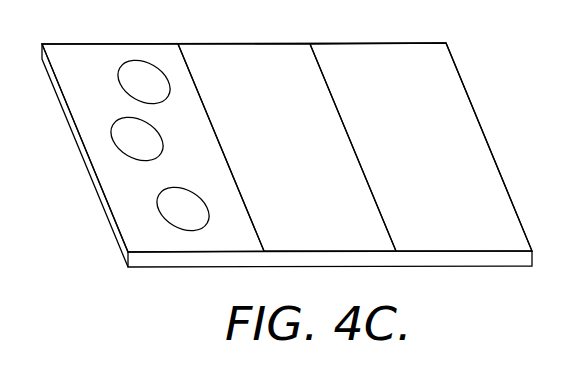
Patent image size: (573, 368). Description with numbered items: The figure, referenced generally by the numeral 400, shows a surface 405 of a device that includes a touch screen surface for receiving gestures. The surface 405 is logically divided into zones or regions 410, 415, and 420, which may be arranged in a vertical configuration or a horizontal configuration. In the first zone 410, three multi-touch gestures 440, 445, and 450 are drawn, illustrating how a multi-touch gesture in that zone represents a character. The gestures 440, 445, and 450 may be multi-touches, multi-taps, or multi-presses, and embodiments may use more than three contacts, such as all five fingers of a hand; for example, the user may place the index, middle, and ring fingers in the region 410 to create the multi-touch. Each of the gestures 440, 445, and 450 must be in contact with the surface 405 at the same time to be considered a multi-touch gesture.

The surface of a device illustrating multi-touch gestures 400 is at (87, 238).
The surface 405 is at (53, 88).
The zone 410 is at (100, 44).
The region 415 is at (235, 44).
The region 420 is at (380, 43).
The multi-touch gesture 440 is at (173, 226).
The multi-touch gesture 445 is at (111, 137).
The multi-touch gesture 450 is at (153, 62).